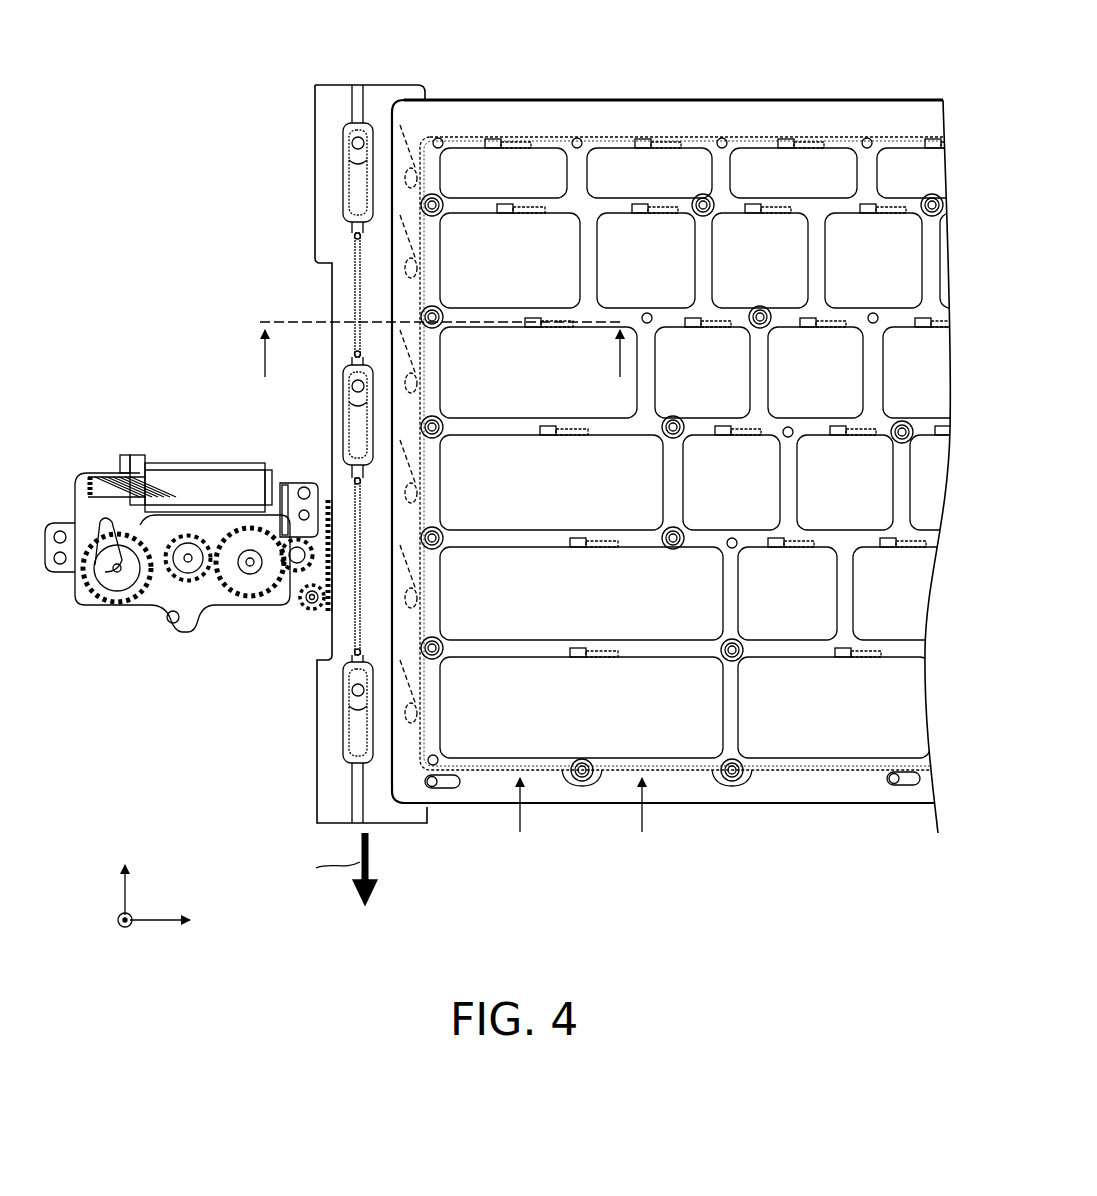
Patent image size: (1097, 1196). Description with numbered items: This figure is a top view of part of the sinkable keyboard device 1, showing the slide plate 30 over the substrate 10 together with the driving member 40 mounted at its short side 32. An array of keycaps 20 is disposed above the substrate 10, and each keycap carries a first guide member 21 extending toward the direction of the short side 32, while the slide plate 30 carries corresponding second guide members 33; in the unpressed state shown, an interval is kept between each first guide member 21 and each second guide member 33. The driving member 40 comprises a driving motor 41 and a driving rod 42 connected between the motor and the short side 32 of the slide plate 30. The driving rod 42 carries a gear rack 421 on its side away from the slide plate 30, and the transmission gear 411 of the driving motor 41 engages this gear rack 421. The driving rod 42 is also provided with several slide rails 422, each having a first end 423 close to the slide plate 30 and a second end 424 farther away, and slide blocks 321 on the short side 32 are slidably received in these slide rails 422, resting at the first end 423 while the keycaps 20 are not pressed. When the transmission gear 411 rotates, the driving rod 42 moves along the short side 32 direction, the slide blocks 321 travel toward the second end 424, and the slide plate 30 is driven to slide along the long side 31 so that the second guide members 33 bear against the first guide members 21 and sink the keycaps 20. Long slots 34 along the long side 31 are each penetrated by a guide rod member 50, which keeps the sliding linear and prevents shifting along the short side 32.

The sinkable keyboard device 1 is at (56, 88).
The substrate 10 is at (833, 140).
The keycaps 20 is at (457, 160).
The first guide members 21 is at (497, 145).
The slide plate 30 is at (887, 120).
The long side 31 is at (610, 100).
The short side 32 is at (395, 783).
The second guide members 33 is at (522, 145).
The long slots 34 is at (914, 790).
The driving member 40 is at (178, 406).
The driving motor 41 is at (160, 463).
The driving rod 42 is at (315, 244).
The guide rod member 50 is at (888, 782).
The slide blocks 321 is at (400, 710).
The transmission gear 411 is at (273, 607).
The gear rack 421 is at (308, 482).
The slide rails 422 is at (385, 313).
The first end 423 is at (400, 742).
The second end 424 is at (340, 628).